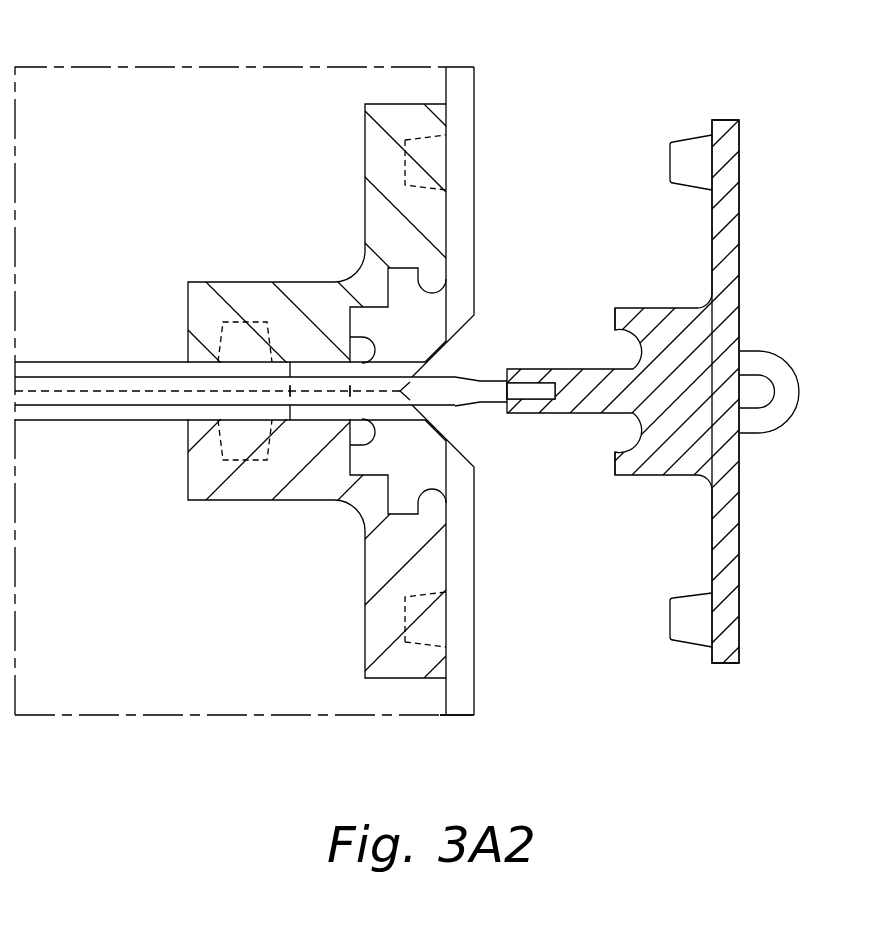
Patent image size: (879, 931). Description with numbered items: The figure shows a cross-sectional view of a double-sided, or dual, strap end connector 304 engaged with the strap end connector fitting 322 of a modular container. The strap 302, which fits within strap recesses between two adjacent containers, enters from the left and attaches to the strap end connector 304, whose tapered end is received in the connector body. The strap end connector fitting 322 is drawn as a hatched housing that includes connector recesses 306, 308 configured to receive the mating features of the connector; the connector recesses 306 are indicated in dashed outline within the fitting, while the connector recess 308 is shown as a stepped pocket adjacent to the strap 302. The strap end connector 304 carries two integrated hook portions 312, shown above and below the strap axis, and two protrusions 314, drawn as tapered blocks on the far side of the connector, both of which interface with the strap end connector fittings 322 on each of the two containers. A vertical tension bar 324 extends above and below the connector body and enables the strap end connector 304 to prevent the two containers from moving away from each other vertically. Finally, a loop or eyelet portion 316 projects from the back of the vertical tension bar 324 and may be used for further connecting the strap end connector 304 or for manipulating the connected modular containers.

The strap 302 is at (481, 378).
The strap end connector 304 is at (682, 306).
The connector recess 306 is at (417, 166).
The connector recess 308 is at (360, 323).
The hook portion 312 is at (615, 320).
The protrusion 314 is at (670, 162).
The loop or eyelet portion 316 is at (800, 391).
The strap end connector fitting 322 is at (287, 287).
The vertical tension bar 324 is at (732, 542).